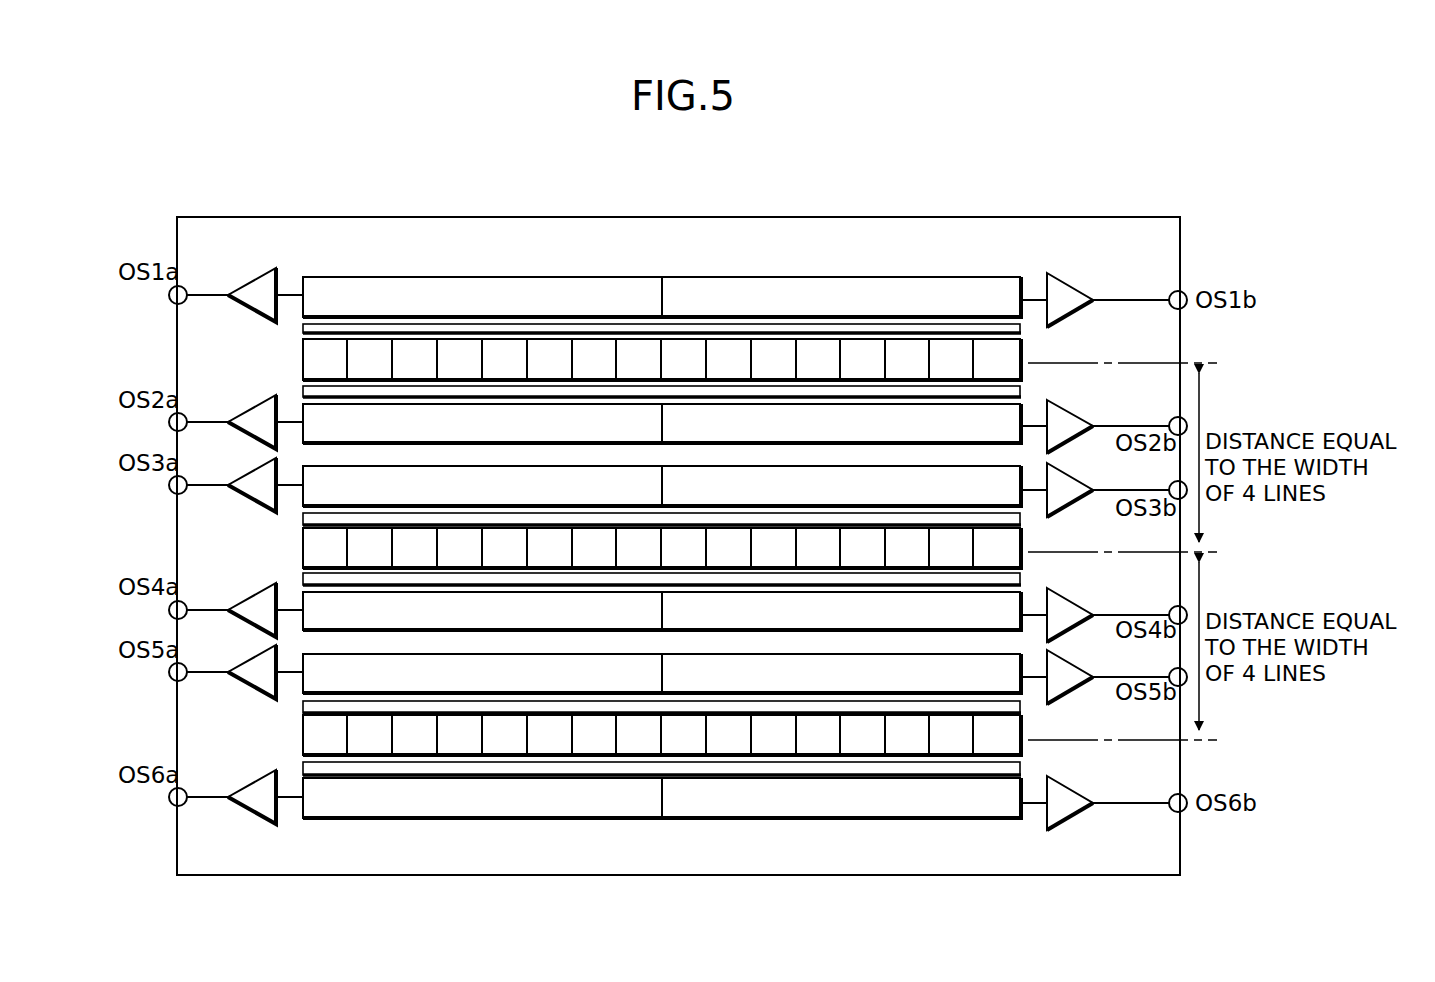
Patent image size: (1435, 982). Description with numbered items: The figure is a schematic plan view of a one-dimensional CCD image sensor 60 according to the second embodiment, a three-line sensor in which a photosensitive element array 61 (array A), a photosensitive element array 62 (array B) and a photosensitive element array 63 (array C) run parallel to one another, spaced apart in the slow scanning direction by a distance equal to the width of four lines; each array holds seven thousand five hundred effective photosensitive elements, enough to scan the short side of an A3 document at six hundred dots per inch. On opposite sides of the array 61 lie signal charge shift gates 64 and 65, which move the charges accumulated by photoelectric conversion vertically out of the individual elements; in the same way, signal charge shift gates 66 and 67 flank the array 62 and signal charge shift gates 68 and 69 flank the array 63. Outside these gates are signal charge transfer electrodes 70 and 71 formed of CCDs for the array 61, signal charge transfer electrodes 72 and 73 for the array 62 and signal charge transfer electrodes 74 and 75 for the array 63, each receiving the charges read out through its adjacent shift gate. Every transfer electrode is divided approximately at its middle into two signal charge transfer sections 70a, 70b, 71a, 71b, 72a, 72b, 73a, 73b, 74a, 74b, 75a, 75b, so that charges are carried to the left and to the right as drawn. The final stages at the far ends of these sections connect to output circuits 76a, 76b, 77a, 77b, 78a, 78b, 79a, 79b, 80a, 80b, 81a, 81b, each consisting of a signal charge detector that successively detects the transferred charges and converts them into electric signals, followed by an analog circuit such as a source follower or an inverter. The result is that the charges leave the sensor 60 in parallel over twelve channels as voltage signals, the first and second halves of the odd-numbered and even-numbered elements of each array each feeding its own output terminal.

The one-dimensional CCD image sensor 60 is at (790, 214).
The photosensitive element array (array A) 61 is at (302, 350).
The photosensitive element array (array B) 62 is at (302, 539).
The photosensitive element array (array C) 63 is at (302, 727).
The signal charge shift gate 64 is at (302, 328).
The signal charge shift gate 65 is at (302, 390).
The signal charge shift gate 66 is at (302, 517).
The signal charge shift gate 67 is at (302, 578).
The signal charge shift gate 68 is at (302, 705).
The signal charge shift gate 69 is at (302, 767).
The signal charge transfer electrode 70 is at (688, 271).
The signal charge transfer section 70a is at (485, 284).
The signal charge transfer section 70b is at (842, 284).
The signal charge transfer electrode 71 is at (685, 403).
The signal charge transfer section 71a is at (482, 423).
The signal charge transfer section 71b is at (841, 423).
The signal charge transfer electrode 72 is at (685, 505).
The signal charge transfer section 72a is at (482, 486).
The signal charge transfer section 72b is at (841, 486).
The signal charge transfer electrode 73 is at (685, 593).
The signal charge transfer section 73a is at (482, 611).
The signal charge transfer section 73b is at (841, 611).
The signal charge transfer electrode 74 is at (685, 693).
The signal charge transfer section 74a is at (482, 673).
The signal charge transfer section 74b is at (841, 673).
The signal charge transfer electrode 75 is at (685, 780).
The signal charge transfer section 75a is at (482, 798).
The signal charge transfer section 75b is at (841, 798).
The output circuit 76a is at (248, 270).
The output circuit 76b is at (1080, 284).
The output circuit 77a is at (248, 412).
The output circuit 77b is at (1078, 411).
The output circuit 78a is at (248, 475).
The output circuit 78b is at (1078, 506).
The output circuit 79a is at (248, 601).
The output circuit 79b is at (1078, 601).
The output circuit 80a is at (248, 663).
The output circuit 80b is at (1078, 694).
The output circuit 81a is at (248, 788).
The output circuit 81b is at (1078, 788).